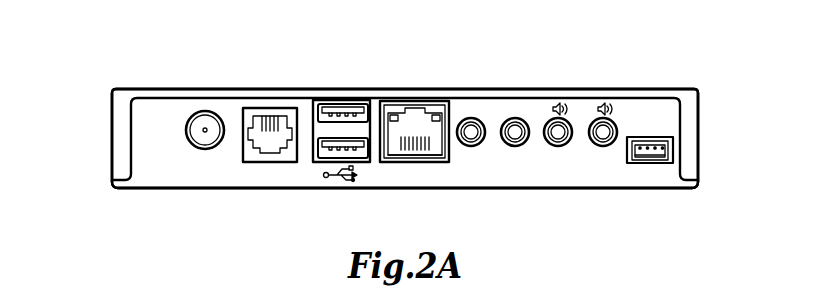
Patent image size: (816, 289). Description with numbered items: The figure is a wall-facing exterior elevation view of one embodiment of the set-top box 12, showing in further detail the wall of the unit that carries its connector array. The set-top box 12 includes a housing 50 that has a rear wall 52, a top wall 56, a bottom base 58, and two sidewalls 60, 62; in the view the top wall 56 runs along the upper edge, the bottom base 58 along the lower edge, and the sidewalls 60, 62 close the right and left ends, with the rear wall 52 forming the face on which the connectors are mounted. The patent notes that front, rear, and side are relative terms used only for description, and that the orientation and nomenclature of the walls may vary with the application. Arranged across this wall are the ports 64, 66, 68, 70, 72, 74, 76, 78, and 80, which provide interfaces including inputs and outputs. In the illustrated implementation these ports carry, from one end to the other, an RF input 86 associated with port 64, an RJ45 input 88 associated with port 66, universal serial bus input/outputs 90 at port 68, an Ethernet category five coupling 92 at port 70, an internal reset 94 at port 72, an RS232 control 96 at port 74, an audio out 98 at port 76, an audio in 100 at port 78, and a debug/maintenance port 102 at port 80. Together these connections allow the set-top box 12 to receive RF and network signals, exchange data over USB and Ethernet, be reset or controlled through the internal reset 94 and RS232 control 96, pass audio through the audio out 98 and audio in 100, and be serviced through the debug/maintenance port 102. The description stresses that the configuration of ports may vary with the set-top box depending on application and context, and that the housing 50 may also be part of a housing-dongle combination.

The set-top box 12 is at (115, 74).
The housing 50 is at (682, 83).
The rear wall 52 is at (147, 175).
The top wall 56 is at (177, 88).
The bottom base 58 is at (288, 189).
The sidewall 60 is at (699, 128).
The sidewall 62 is at (111, 130).
The port 64 is at (207, 114).
The port 66 is at (271, 110).
The port 68 is at (343, 100).
The port 70 is at (418, 108).
The port 72 is at (471, 118).
The port 74 is at (515, 118).
The port 76 is at (558, 118).
The port 78 is at (603, 118).
The port 80 is at (650, 163).
The RF input 86 is at (207, 149).
The RJ45 input 88 is at (248, 162).
The universal serial bus (USB) input/outputs 90 is at (333, 163).
The Ethernet category 5 (Cat 5) coupling 92 is at (417, 162).
The internal reset 94 is at (472, 144).
The RS232 control 96 is at (515, 144).
The audio out 98 is at (558, 144).
The audio in 100 is at (603, 144).
The debug/maintenance port 102 is at (674, 152).